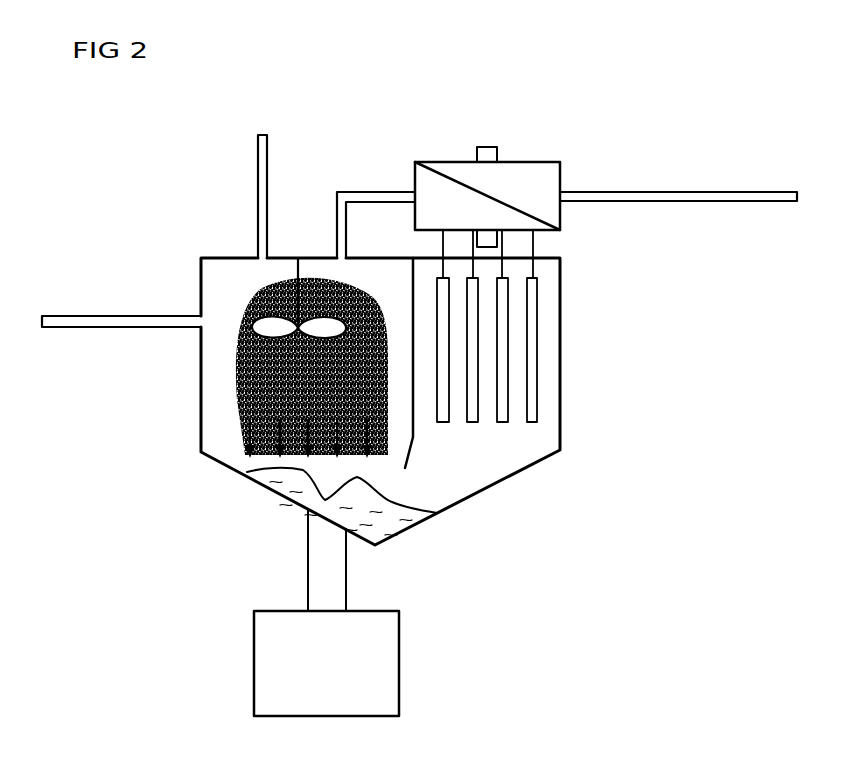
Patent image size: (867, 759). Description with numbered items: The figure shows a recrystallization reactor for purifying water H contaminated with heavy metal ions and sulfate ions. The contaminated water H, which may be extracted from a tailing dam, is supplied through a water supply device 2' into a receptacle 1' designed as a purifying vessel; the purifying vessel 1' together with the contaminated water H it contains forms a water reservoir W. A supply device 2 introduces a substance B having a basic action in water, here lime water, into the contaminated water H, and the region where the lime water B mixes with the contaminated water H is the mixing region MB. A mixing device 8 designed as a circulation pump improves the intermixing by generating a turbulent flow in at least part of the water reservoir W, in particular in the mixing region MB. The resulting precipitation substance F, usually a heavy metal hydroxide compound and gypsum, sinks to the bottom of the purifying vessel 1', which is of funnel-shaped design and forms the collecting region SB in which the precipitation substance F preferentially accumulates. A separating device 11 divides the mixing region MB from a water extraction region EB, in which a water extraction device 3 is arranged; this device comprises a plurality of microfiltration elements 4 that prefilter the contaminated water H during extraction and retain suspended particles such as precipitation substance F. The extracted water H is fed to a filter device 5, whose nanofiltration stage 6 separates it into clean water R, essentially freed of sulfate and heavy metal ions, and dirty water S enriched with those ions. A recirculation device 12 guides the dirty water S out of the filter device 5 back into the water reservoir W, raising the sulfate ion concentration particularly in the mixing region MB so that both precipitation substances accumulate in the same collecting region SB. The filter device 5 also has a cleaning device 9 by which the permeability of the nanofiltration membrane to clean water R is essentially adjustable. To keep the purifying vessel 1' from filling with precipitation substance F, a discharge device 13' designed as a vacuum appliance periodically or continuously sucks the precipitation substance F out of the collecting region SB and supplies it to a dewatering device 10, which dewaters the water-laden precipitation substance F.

The receptacle 1' is at (419, 401).
The supply device 2 is at (286, 196).
The water supply device 2' is at (121, 279).
The water extraction device 3 is at (526, 352).
The microfiltration elements 4 is at (441, 422).
The filter device 5 is at (534, 150).
The nanofiltration stage 6 is at (449, 178).
The mixing device 8 is at (330, 322).
The cleaning device 9 is at (487, 147).
The dewatering device 10 is at (400, 663).
The separating device 11 is at (413, 272).
The recirculation device 12 is at (368, 192).
The discharge device 13' is at (283, 560).
The substance having a basic action in water B is at (260, 188).
The mixing region MB is at (258, 282).
The dirty water S is at (338, 243).
The clean water R is at (698, 195).
The contaminated water H is at (150, 316).
The water reservoir W is at (184, 349).
The precipitation substance F is at (240, 392).
The collecting region SB is at (232, 455).
The water extraction region EB is at (491, 460).